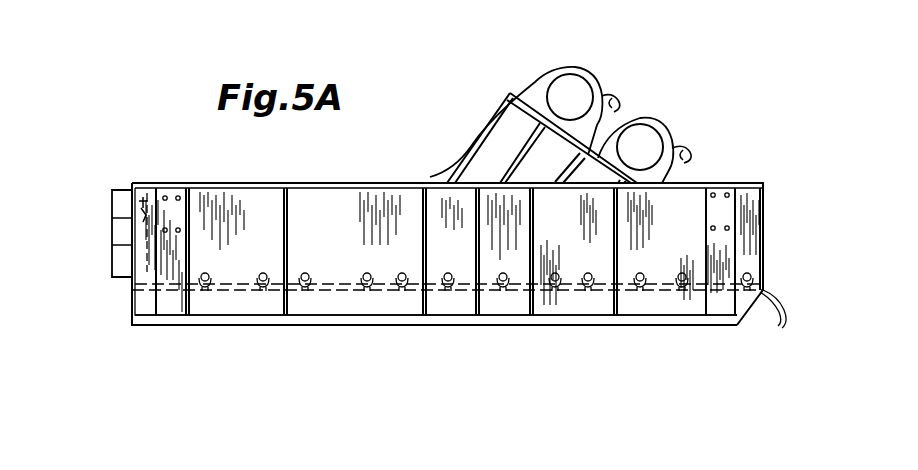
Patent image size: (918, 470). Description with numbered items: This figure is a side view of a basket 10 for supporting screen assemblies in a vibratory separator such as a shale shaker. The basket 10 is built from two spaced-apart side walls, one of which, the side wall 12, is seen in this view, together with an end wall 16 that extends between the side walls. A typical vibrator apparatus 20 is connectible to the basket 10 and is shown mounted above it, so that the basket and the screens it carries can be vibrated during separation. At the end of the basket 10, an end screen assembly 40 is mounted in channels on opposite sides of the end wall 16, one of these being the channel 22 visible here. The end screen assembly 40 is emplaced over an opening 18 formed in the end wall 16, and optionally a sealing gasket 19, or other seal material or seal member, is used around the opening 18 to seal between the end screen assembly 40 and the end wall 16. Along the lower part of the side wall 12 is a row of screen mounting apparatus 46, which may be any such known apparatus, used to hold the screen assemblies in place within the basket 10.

The basket 10 is at (360, 183).
The side wall 12 is at (546, 300).
The end wall 16 is at (132, 292).
The opening 18 is at (112, 218).
The sealing gasket 19 is at (118, 257).
The vibrator apparatus 20 is at (648, 122).
The channel 22 is at (118, 245).
The end screen assembly 40 is at (143, 200).
The screen mounting apparatus 46 is at (305, 290).